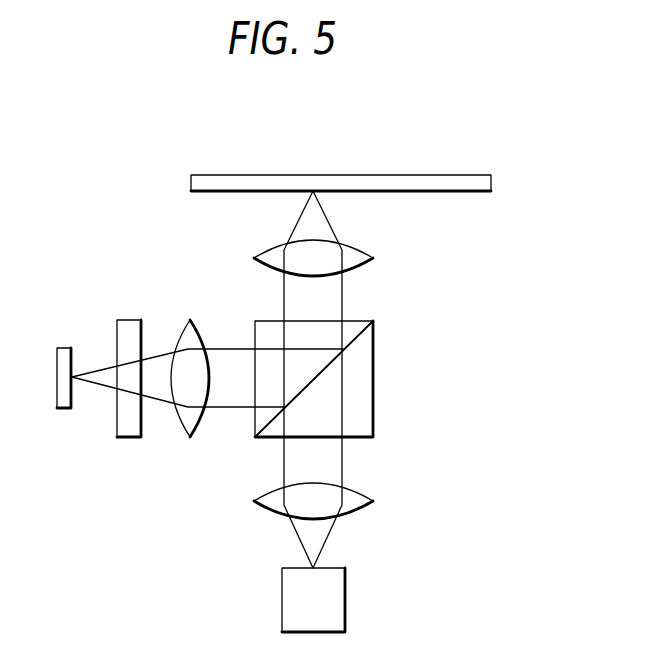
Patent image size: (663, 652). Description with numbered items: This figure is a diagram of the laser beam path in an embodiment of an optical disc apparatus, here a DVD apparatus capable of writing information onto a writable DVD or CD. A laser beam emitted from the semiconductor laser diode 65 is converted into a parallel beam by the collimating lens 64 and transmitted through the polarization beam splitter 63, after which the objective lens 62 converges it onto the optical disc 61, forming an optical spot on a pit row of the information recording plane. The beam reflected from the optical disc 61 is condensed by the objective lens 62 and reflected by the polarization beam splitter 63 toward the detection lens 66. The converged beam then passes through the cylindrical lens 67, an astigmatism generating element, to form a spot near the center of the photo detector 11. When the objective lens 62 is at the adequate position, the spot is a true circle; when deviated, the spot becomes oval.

The photo detector 11 is at (63, 348).
The optical disc 61 is at (340, 175).
The objective lens 62 is at (355, 249).
The polarization beam splitter 63 is at (374, 375).
The collimating lens 64 is at (355, 492).
The semiconductor laser diode 65 is at (346, 598).
The detection lens 66 is at (198, 331).
The cylindrical lens 67 is at (130, 320).